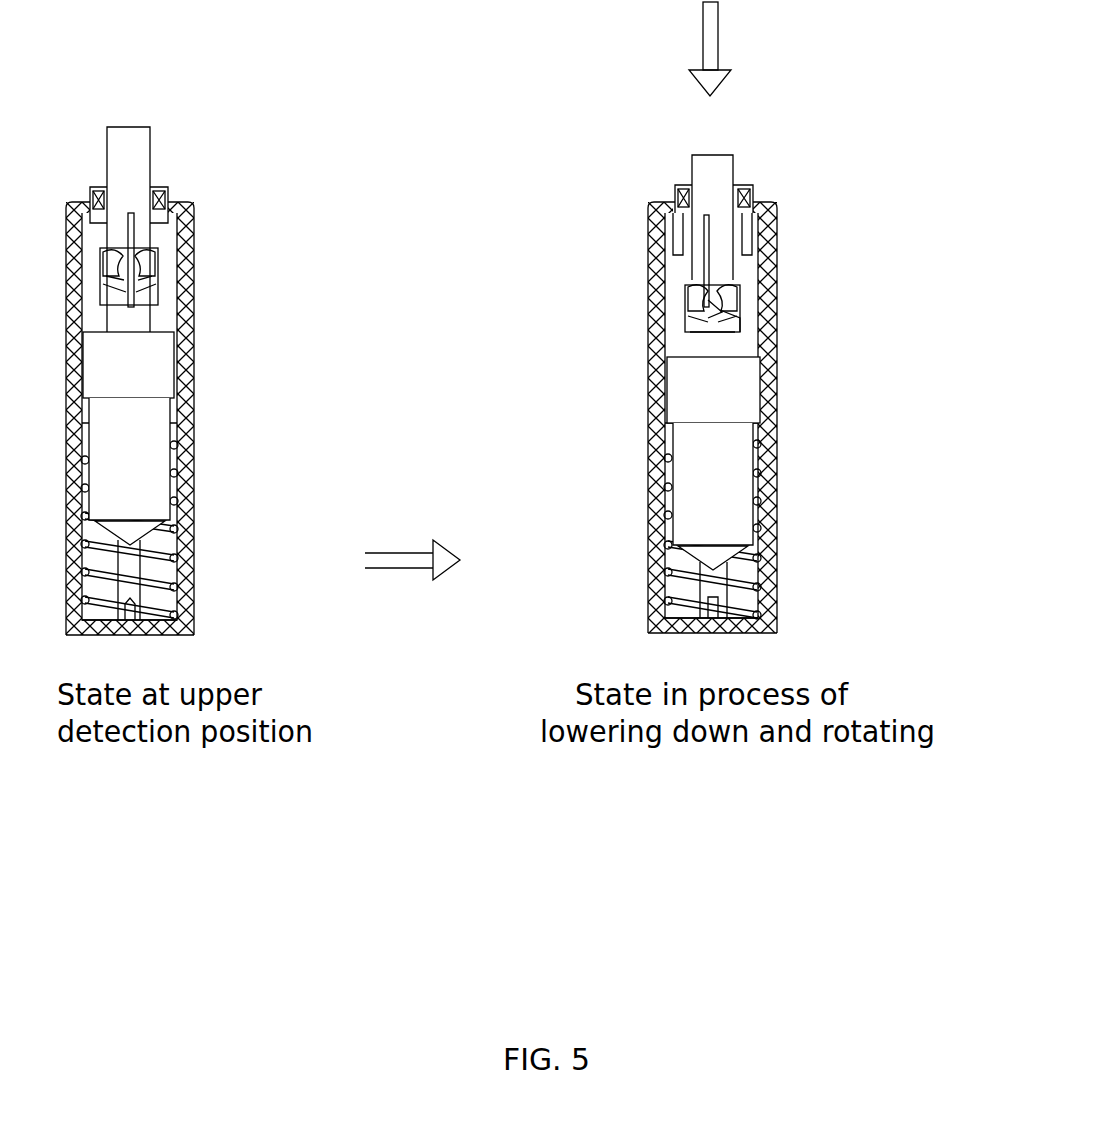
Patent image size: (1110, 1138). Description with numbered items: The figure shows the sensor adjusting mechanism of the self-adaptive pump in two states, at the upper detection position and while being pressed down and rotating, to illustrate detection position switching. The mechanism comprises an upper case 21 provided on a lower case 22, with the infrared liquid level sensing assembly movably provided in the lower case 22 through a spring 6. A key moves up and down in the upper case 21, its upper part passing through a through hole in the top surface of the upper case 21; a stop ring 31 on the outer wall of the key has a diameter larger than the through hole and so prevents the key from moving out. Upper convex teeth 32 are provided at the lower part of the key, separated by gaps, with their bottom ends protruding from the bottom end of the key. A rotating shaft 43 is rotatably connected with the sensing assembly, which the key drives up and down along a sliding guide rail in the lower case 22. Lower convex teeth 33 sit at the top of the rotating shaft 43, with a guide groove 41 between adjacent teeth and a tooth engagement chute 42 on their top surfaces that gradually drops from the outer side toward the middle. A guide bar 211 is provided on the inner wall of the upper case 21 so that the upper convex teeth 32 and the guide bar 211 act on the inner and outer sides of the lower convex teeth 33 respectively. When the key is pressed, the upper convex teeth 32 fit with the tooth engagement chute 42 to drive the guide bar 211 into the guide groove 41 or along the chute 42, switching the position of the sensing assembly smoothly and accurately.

The spring 6 is at (176, 590).
The upper case 21 is at (777, 388).
The lower case 22 is at (777, 523).
The stop ring 31 is at (742, 248).
The upper convex teeth 32 is at (702, 297).
The lower convex teeth 33 is at (712, 332).
The guide groove 41 is at (742, 322).
The tooth engagement chute 42 is at (720, 312).
The rotating shaft 43 is at (760, 350).
The guide bar 211 is at (700, 258).